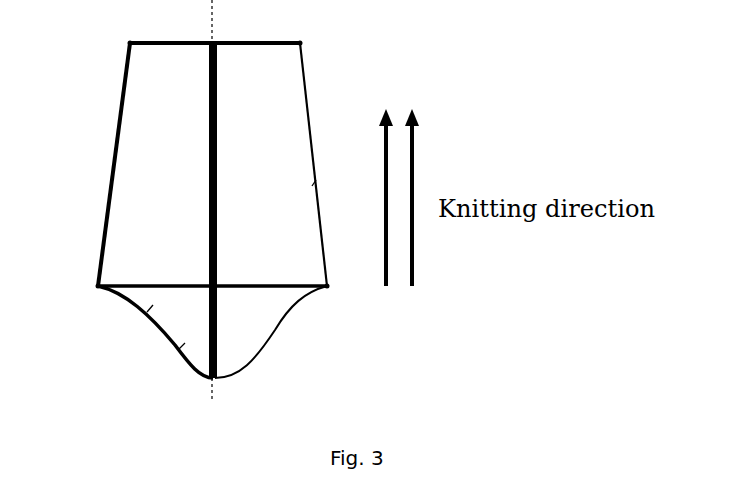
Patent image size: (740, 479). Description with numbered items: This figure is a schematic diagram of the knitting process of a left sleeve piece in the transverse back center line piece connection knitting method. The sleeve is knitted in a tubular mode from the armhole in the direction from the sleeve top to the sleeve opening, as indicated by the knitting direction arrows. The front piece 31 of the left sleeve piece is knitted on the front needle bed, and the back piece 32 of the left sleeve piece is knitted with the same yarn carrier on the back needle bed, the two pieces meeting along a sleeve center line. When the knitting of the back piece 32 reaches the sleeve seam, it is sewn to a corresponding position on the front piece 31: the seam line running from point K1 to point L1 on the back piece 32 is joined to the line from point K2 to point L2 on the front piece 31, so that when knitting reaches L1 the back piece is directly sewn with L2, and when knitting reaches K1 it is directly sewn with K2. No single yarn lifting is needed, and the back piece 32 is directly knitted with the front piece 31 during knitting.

The front piece of the left sleeve piece 31 is at (292, 115).
The back piece of the left sleeve piece 32 is at (148, 168).
The point L1 is at (126, 33).
The point L2 is at (308, 39).
The point K1 is at (86, 286).
The point K2 is at (339, 287).